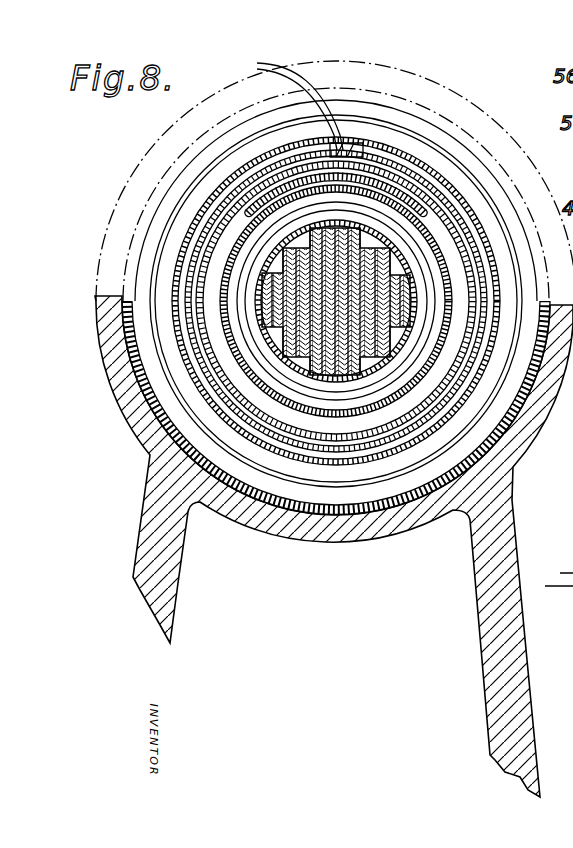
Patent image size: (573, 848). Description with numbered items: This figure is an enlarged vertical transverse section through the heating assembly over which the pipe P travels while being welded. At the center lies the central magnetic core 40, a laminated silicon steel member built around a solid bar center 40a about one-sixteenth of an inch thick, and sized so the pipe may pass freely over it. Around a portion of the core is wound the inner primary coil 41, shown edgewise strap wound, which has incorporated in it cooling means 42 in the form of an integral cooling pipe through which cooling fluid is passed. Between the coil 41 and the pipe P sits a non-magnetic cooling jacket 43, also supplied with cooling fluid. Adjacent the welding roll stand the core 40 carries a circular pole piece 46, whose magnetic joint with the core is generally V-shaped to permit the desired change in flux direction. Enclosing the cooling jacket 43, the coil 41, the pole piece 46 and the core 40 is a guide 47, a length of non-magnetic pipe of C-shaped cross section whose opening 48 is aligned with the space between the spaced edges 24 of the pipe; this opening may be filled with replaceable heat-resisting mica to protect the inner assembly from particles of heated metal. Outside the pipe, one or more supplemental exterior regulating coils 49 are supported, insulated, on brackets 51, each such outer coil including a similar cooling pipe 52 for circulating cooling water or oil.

The spaced edges 24 is at (278, 98).
The opening 48 is at (400, 190).
The non-magnetic cooling jacket 43 is at (413, 205).
The pipe P is at (250, 190).
The supplemental exterior regulating coils 49 is at (172, 203).
The coil 41 is at (257, 282).
The central magnetic core 40 is at (268, 310).
The guide 47 is at (273, 336).
The circular pole piece 46 is at (245, 365).
The cooling pipe 52 is at (173, 395).
The brackets 51 is at (152, 513).
The cooling means 42 is at (285, 378).
The solid bar center 40a is at (330, 380).